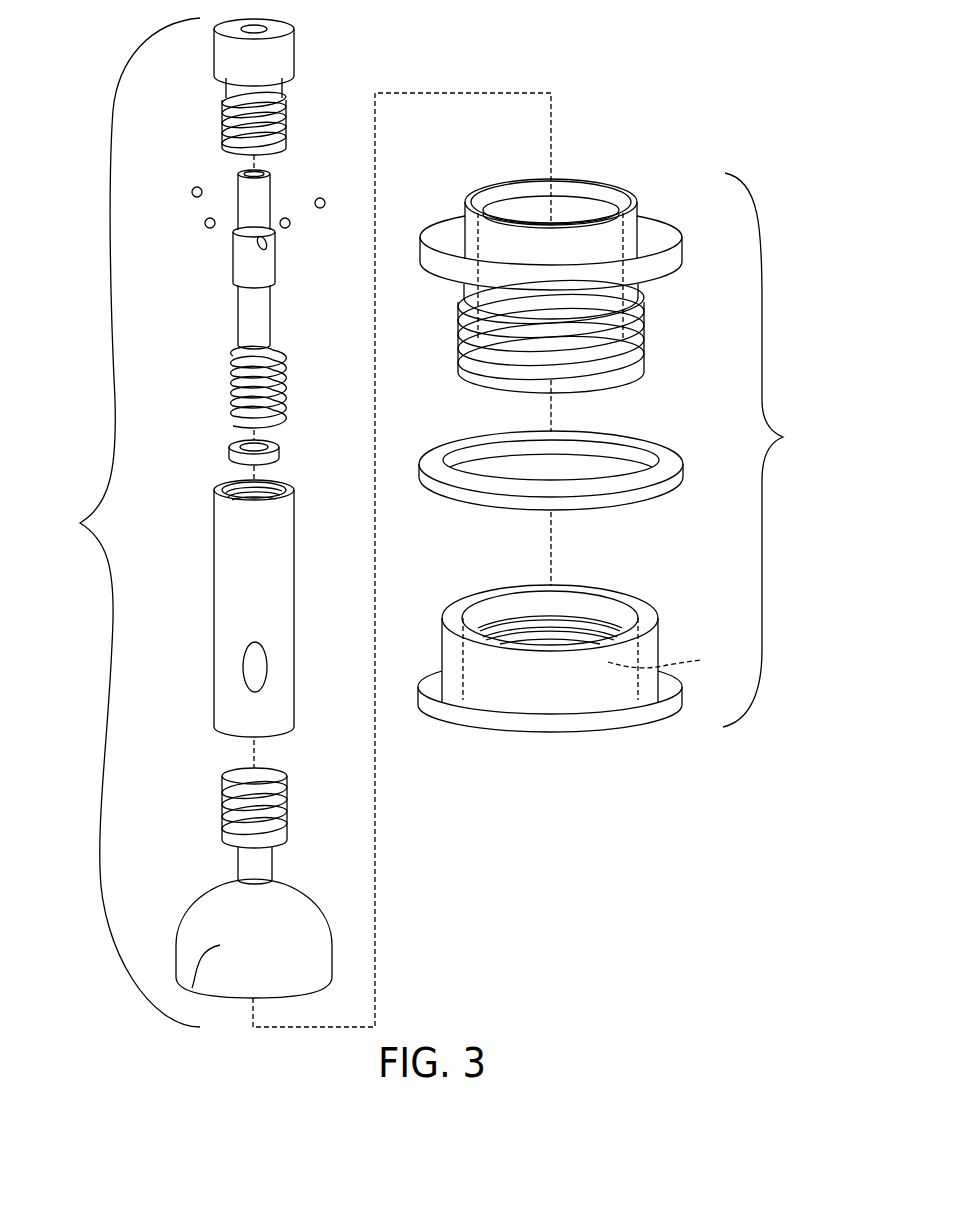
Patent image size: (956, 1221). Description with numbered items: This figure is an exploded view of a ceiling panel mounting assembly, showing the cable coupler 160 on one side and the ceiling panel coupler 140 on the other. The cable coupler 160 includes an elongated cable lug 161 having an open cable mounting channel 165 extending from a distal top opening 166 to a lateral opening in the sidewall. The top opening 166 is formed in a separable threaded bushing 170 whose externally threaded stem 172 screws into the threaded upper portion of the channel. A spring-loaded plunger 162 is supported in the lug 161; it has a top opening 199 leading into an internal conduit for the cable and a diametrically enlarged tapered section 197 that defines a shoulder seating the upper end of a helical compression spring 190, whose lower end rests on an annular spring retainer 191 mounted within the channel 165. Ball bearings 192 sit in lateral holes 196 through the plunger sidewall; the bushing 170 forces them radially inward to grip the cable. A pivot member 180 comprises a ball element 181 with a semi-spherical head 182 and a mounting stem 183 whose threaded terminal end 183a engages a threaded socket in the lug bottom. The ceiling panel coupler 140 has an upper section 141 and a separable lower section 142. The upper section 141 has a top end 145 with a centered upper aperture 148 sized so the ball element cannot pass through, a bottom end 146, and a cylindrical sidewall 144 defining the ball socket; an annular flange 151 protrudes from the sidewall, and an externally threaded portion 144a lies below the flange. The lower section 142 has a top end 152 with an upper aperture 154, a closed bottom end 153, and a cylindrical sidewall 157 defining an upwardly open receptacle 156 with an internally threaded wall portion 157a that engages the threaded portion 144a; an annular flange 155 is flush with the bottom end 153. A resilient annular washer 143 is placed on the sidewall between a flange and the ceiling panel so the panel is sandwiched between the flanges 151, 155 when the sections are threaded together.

The ceiling panel coupler 140 is at (774, 450).
The upper section 141 is at (579, 249).
The lower section 142 is at (562, 698).
The resilient annular washer 143 is at (445, 453).
The cylindrical sidewall 144 is at (457, 290).
The externally threaded portion 144a is at (467, 343).
The top end 145 is at (598, 192).
The bottom end 146 is at (640, 353).
The upper aperture 148 is at (584, 180).
The annular flange 151 is at (655, 218).
The top end 152 is at (562, 633).
The bottom end 153 is at (550, 751).
The upper aperture 154 is at (498, 595).
The annular flange 155 is at (605, 735).
The receptacle 156 is at (673, 660).
The cylindrical sidewall 157 is at (443, 649).
The internally threaded wall portion 157a is at (603, 613).
The cable coupler 160 is at (121, 522).
The cable lug 161 is at (214, 598).
The plunger 162 is at (243, 229).
The cable mounting channel 165 is at (228, 484).
The distal top opening 166 is at (246, 26).
The threaded bushing 170 is at (252, 58).
The externally threaded stem 172 is at (285, 127).
The pivot member 180 is at (225, 889).
The ball element 181 is at (225, 945).
The semi-spherical head 182 is at (193, 988).
The mounting stem 183 is at (237, 874).
The threaded terminal end 183a is at (222, 800).
The helical compression spring 190 is at (233, 370).
The annular spring retainer 191 is at (230, 450).
The ball bearings 192 is at (193, 196).
The lateral hole 196 is at (266, 250).
The tapered section 197 is at (247, 267).
The top opening 199 is at (240, 174).